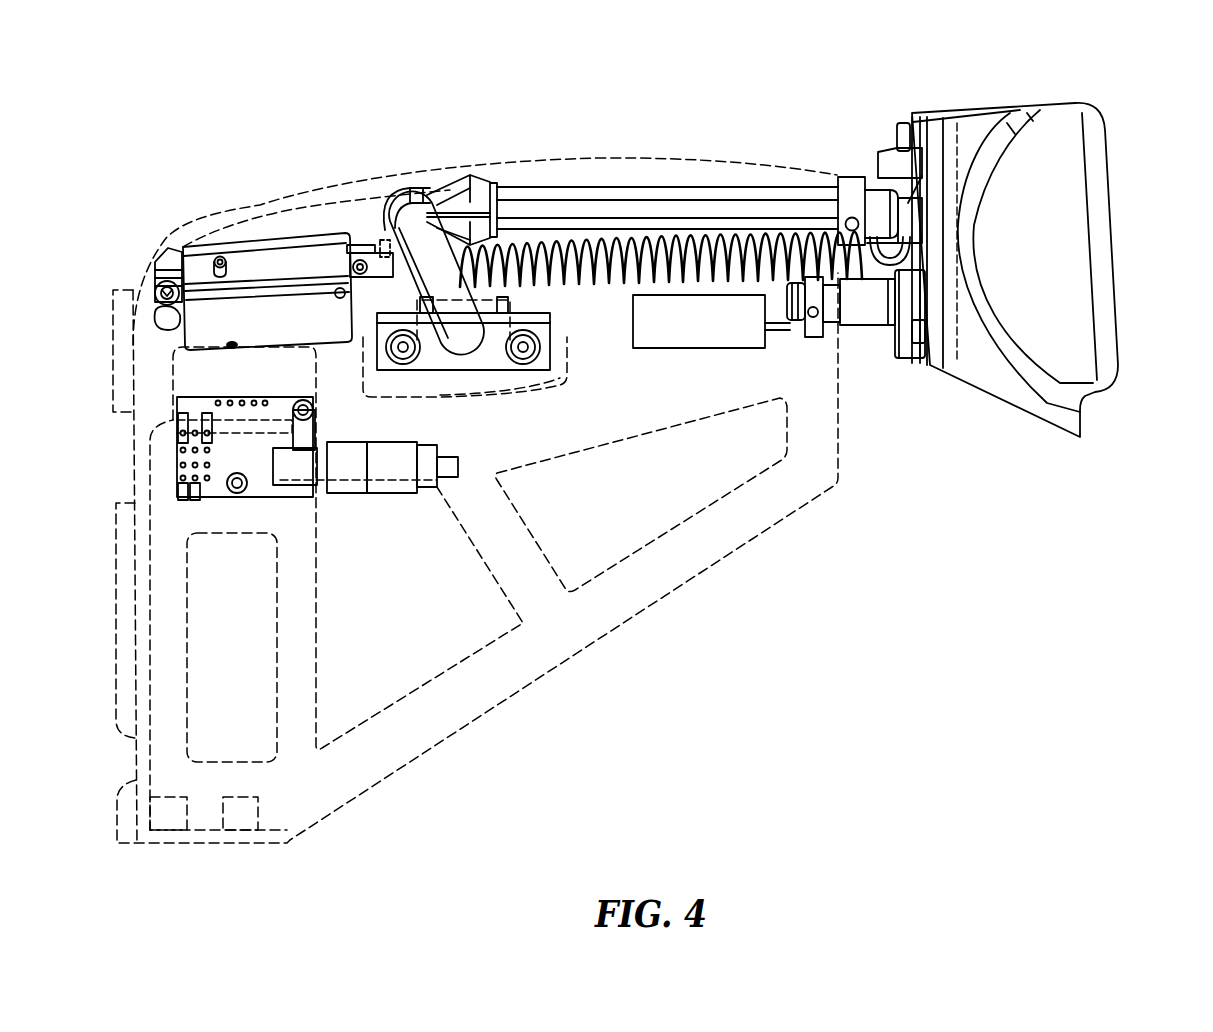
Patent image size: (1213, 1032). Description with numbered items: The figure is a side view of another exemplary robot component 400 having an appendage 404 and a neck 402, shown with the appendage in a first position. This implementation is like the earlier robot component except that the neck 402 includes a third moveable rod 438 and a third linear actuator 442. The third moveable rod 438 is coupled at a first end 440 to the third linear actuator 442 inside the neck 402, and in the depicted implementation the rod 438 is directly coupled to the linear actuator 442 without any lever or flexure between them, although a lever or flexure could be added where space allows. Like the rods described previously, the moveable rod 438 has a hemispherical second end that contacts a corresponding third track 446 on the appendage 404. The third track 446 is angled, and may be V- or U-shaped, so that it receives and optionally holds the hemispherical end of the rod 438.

The robot component 400 is at (205, 106).
The neck 402 is at (537, 427).
The appendage 404 is at (1067, 185).
The third moveable rod 438 is at (867, 300).
The first end 440 is at (833, 310).
The third linear actuator 442 is at (695, 335).
The third track 446 is at (912, 297).